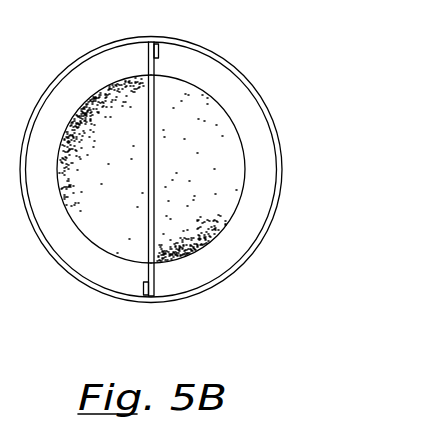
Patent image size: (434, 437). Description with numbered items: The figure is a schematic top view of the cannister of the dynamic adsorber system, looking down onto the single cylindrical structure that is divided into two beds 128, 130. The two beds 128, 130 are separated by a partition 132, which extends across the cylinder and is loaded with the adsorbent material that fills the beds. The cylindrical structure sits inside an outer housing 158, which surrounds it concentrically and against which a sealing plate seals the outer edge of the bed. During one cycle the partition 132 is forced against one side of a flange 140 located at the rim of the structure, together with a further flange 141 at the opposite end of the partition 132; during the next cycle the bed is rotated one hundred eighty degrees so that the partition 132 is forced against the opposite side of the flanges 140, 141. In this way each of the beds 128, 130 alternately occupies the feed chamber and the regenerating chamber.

The bed 128 is at (213, 172).
The bed 130 is at (125, 172).
The partition 132 is at (147, 86).
The flange 140 is at (142, 288).
The upper lug of divider 141 is at (158, 54).
The housing 158 is at (256, 92).